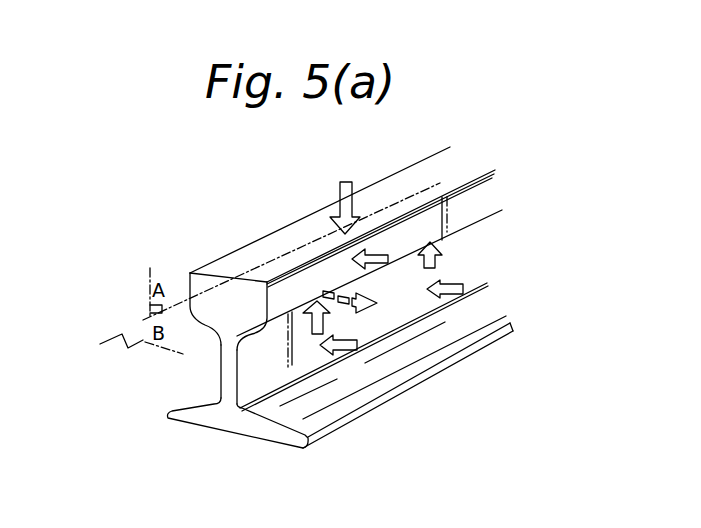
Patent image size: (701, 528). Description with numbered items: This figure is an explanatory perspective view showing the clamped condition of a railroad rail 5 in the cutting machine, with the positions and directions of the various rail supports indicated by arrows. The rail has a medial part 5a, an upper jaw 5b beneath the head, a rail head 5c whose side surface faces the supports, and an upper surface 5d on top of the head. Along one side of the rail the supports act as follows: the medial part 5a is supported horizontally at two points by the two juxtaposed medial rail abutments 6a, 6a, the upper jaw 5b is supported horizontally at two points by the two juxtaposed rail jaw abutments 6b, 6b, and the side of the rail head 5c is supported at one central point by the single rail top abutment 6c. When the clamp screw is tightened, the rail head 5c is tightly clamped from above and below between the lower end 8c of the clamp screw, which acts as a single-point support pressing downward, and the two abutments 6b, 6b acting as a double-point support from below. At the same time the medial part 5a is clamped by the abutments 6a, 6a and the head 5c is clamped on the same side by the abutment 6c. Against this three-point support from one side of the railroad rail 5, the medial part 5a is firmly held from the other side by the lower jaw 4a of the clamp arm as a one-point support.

The railroad rail 5 is at (140, 414).
The medial part of the rail 5a is at (221, 357).
The upper jaw of the rail 5b is at (247, 329).
The rail head 5c is at (190, 273).
The upper surface of the railroad rail 5d is at (253, 252).
The lower jaw of clamp arm 4a is at (326, 292).
The medial rail abutments 6a is at (456, 298).
The rail jaw abutments 6b is at (440, 264).
The rail top abutment 6c is at (379, 251).
The lower end of clamp screw 8c is at (343, 182).